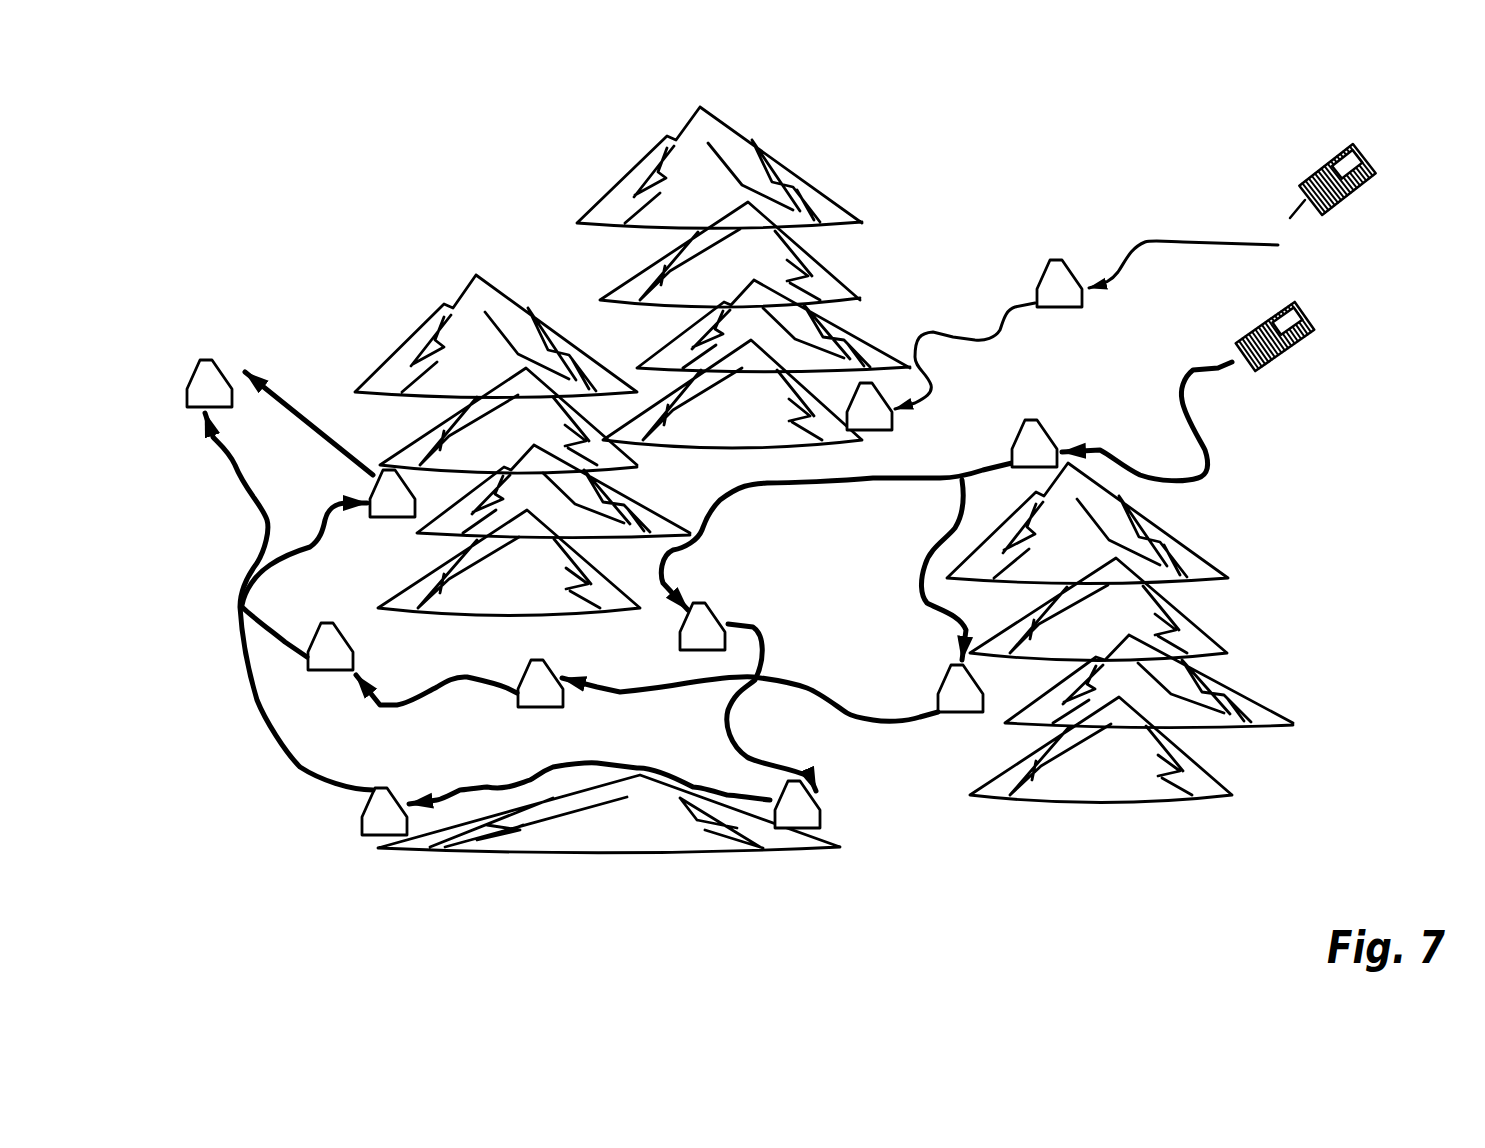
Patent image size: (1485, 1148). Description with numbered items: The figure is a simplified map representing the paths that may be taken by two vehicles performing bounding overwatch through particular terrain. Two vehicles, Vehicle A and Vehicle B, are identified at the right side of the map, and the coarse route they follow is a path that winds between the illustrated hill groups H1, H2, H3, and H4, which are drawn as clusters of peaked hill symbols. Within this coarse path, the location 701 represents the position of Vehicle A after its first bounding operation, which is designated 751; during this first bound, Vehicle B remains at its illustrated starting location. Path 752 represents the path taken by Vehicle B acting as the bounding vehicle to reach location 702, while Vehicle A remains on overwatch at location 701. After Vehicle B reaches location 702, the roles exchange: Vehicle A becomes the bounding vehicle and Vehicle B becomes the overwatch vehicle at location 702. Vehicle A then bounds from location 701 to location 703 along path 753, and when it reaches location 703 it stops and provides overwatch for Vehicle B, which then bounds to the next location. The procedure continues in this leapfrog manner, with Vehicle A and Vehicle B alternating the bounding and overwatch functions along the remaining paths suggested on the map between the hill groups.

The location 701 is at (1059, 283).
The location 702 is at (1034, 443).
The location 703 is at (869, 406).
The first bounding operation 751 is at (1184, 242).
The path 752 is at (1208, 468).
The path 753 is at (953, 331).
The hill group H1 is at (777, 152).
The hill group H2 is at (467, 288).
The hill group H3 is at (573, 855).
The hill group H4 is at (1142, 803).
The vehicle A Vehicle A is at (1337, 203).
The vehicle B Vehicle B is at (1272, 357).